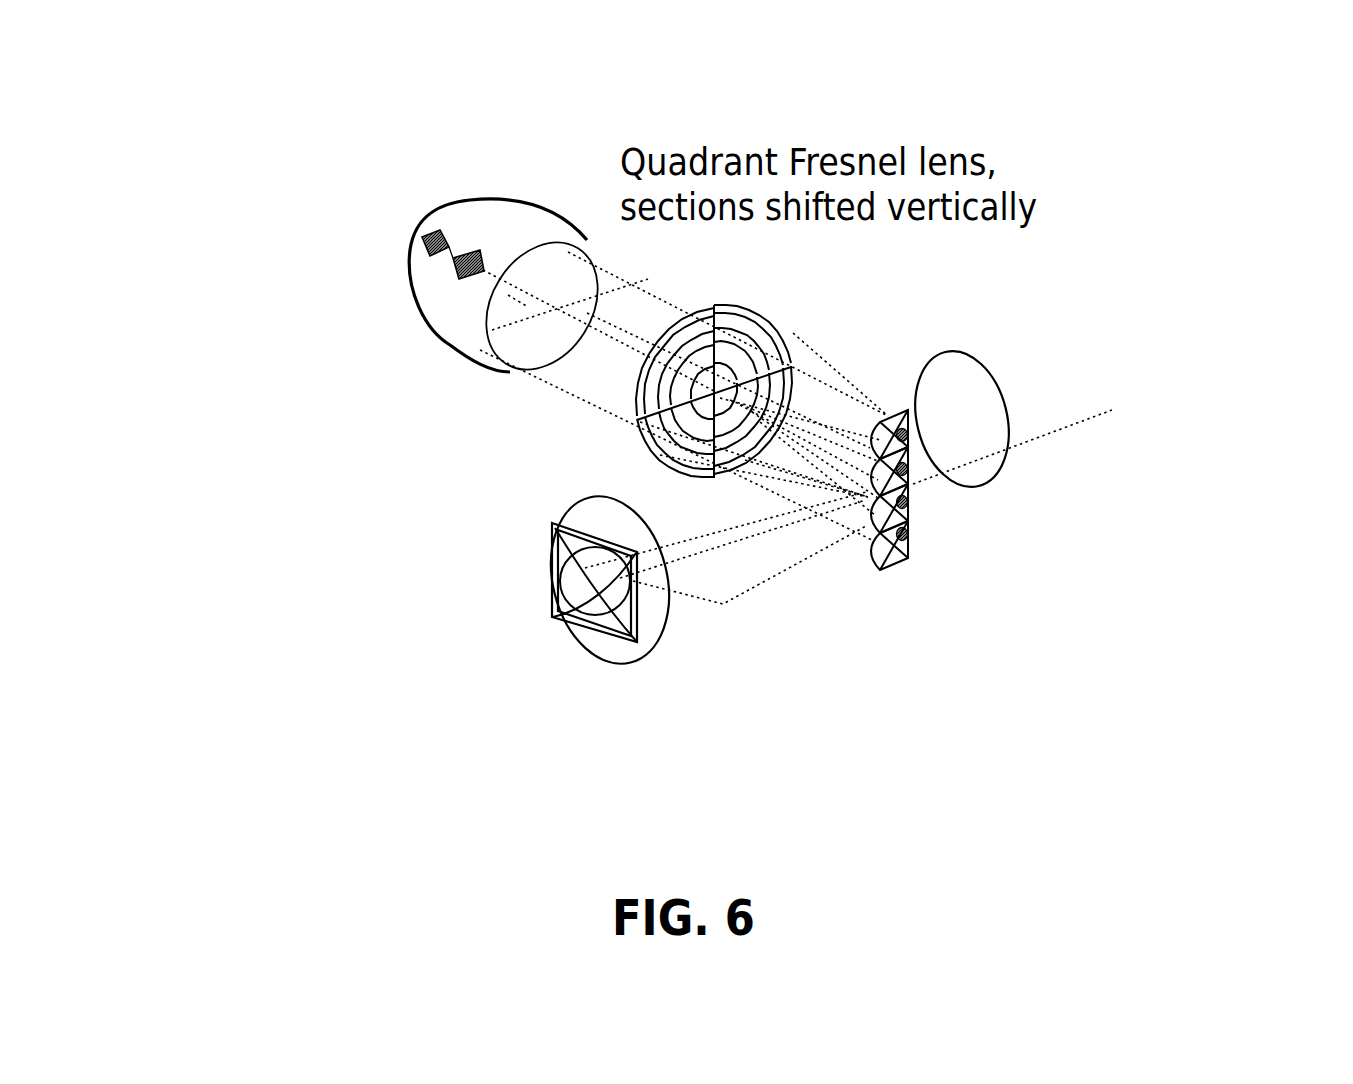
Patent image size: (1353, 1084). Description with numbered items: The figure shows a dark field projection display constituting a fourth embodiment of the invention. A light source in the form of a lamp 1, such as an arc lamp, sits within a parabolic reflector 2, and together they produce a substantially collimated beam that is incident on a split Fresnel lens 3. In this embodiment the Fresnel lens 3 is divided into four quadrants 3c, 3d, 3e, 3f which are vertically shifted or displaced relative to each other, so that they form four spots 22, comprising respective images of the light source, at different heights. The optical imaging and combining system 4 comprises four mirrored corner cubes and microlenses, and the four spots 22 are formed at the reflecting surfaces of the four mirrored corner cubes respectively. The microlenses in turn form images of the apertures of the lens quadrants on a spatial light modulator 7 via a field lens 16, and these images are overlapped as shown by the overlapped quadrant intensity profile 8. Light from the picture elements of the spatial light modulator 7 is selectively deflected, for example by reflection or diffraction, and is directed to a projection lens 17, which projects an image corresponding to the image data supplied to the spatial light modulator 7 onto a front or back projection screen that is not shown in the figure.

The lamp 1 is at (457, 243).
The parabolic reflector 2 is at (401, 330).
The Fresnel lens 3 is at (772, 308).
The quadrant of Fresnel lens 3c is at (777, 338).
The quadrant of Fresnel lens 3d is at (787, 393).
The quadrant of Fresnel lens 3e is at (678, 455).
The quadrant of Fresnel lens 3f is at (658, 390).
The optical imaging and combining system 4 is at (928, 572).
The spatial light modulator 7 is at (553, 563).
The overlapped images 8 is at (576, 670).
The field lens 16 is at (526, 576).
The projection lens 17 is at (1045, 378).
The four spots 22 is at (910, 540).